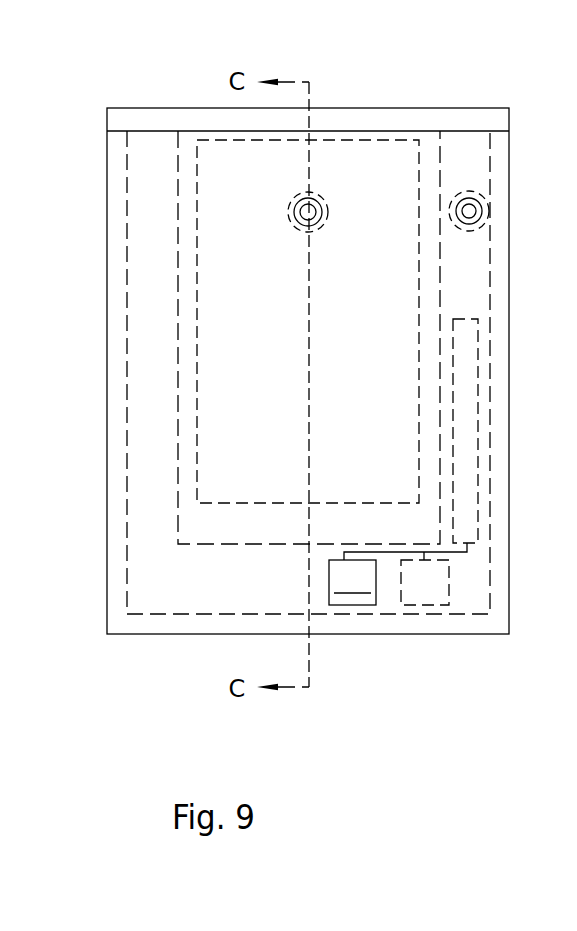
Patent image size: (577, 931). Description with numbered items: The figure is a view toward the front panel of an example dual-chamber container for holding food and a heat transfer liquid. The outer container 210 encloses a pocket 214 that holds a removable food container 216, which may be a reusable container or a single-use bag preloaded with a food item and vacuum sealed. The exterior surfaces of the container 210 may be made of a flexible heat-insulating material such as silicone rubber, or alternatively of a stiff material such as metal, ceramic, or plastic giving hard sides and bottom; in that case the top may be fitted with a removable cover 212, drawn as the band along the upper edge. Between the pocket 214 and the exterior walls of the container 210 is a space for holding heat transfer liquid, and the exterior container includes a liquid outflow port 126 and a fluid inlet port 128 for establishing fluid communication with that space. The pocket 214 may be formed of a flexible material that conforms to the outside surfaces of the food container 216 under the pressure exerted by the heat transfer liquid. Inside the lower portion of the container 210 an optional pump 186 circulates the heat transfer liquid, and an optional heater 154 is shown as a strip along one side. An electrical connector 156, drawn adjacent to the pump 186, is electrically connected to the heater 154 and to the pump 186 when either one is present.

The outer container 210 is at (107, 238).
The removable cover 212 is at (460, 108).
The pocket 214 is at (178, 186).
The removable food container 216 is at (198, 292).
The liquid outflow port 126 is at (323, 212).
The fluid inlet port 128 is at (469, 229).
The heater 154 is at (478, 347).
The electrical connector 156 is at (352, 582).
The pump 186 is at (449, 566).